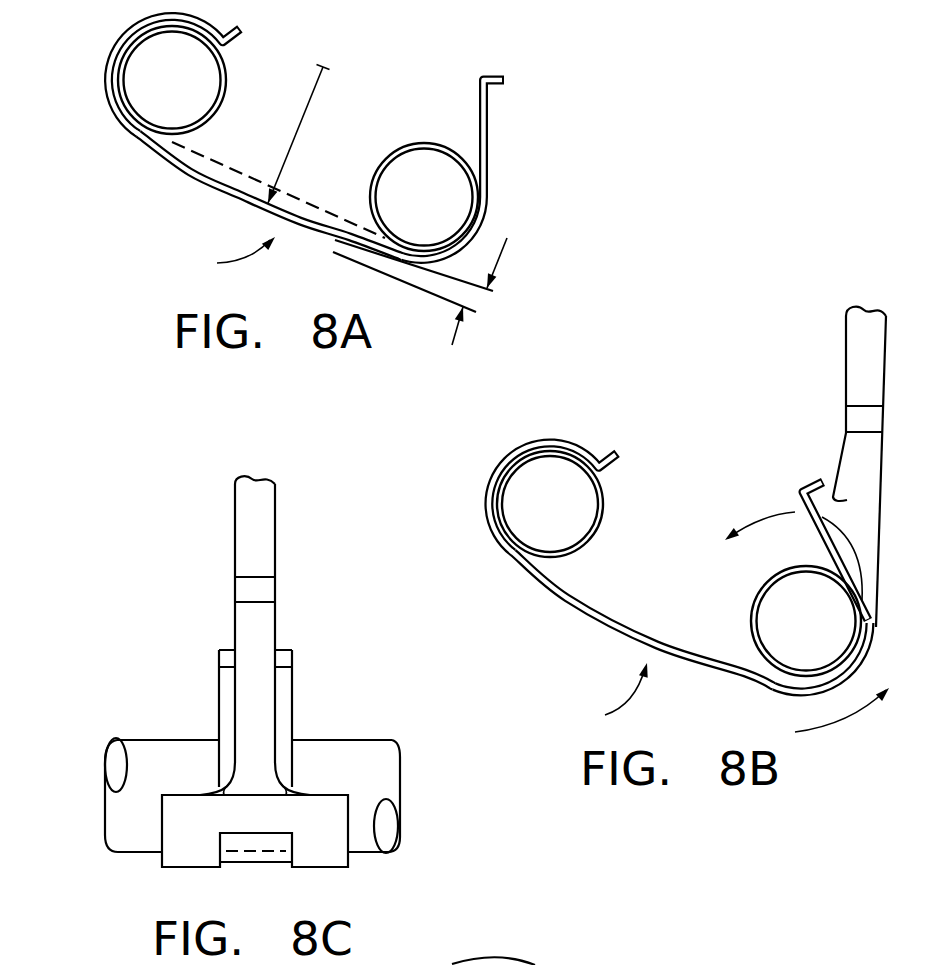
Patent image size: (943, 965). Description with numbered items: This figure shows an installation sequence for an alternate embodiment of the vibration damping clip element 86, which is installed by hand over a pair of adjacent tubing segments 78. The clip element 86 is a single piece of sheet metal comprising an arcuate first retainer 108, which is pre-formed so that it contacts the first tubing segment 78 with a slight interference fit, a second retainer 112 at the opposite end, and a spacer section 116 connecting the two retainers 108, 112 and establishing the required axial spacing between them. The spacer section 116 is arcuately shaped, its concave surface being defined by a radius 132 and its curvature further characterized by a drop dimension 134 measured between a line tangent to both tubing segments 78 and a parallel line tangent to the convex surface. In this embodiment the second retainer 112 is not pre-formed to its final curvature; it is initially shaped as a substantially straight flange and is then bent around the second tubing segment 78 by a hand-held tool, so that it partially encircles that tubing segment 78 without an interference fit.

In FIG. 8A, the tubing segments 78 is at (226, 99).
In FIG. 8B, the tubing segments 78 is at (598, 535).
In FIG. 8C, the tubing segments 78 is at (353, 738).
In FIG. 8A, the clip element 86 is at (225, 254).
In FIG. 8B, the clip element 86 is at (606, 695).
In FIG. 8A, the first retainer 108 is at (128, 28).
In FIG. 8B, the first retainer 108 is at (553, 440).
In FIG. 8A, the second retainer 112 is at (492, 132).
In FIG. 8B, the second retainer 112 is at (796, 489).
In FIG. 8C, the second retainer 112 is at (218, 670).
In FIG. 8A, the spacer section 116 is at (188, 179).
In FIG. 8B, the spacer section 116 is at (600, 624).
In FIG. 8A, the radius 132 is at (289, 152).
In FIG. 8A, the drop dimension 134 is at (503, 247).